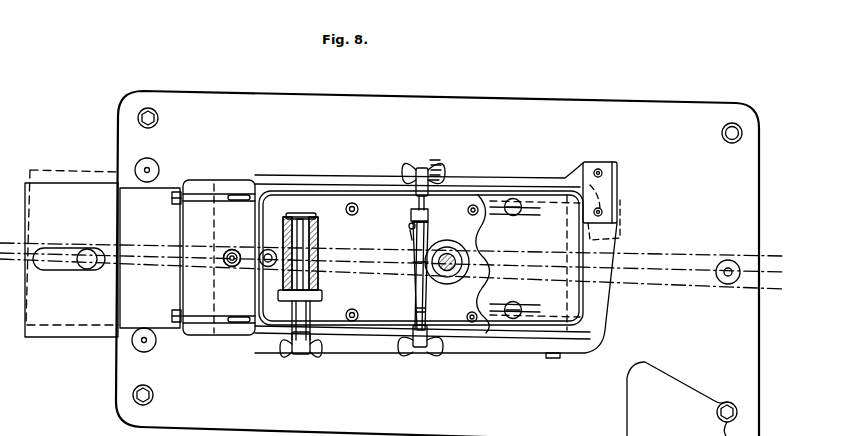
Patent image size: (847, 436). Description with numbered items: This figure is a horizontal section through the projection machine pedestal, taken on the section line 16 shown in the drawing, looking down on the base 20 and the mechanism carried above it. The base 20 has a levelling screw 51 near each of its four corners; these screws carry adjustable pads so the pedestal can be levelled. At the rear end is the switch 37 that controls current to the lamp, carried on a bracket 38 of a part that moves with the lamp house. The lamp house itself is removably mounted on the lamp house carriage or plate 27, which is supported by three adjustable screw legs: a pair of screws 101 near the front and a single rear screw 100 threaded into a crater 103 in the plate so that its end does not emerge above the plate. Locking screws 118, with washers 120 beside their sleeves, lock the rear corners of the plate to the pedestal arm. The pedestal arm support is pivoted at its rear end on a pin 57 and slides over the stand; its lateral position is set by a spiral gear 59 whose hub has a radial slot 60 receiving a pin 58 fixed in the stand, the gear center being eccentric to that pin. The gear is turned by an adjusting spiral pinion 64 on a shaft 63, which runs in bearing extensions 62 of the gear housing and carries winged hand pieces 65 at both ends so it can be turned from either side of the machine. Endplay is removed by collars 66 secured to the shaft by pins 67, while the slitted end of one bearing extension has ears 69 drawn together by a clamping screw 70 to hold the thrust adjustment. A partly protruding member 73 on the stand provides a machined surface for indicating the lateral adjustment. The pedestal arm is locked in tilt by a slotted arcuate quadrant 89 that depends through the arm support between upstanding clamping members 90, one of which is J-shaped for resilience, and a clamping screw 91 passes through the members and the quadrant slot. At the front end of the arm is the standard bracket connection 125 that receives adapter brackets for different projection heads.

The base 20 is at (521, 108).
The levelling screws 51 is at (159, 119).
The switch 37 is at (58, 195).
The bracket 38 is at (156, 195).
The lamp house carriage or plate 27 is at (211, 185).
The carrier plate 16 is at (296, 191).
The winged hand pieces 65 is at (441, 172).
The adjustable screws 101 is at (517, 200).
The standard bracket connection 125 is at (610, 177).
The washer 120 is at (179, 217).
The locking screws 118 is at (176, 313).
The crater 103 is at (233, 251).
The adjustable screw 100 is at (233, 268).
The pin 57 is at (269, 249).
The clamping members 90 is at (305, 218).
The slotted arcuate quadrant 89 is at (318, 251).
The clamping screw 91 is at (305, 285).
The radial slot 60 is at (476, 264).
The collar 66 is at (411, 215).
The pin 67 is at (426, 218).
The clamping screw 70 is at (409, 226).
The ears 69 is at (411, 231).
The spiral gear 59 is at (446, 250).
The pin 58 is at (450, 273).
The adjusting spiral pinion 64 is at (413, 262).
The bearing extensions 62 is at (414, 283).
The shaft 63 is at (416, 312).
The partly protruding member 73 is at (554, 359).